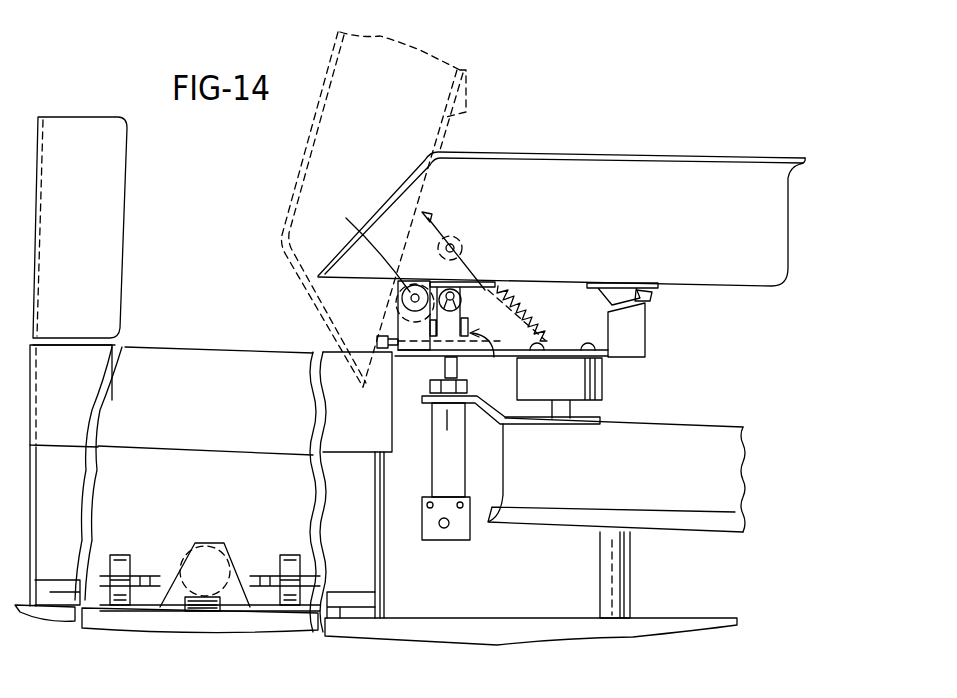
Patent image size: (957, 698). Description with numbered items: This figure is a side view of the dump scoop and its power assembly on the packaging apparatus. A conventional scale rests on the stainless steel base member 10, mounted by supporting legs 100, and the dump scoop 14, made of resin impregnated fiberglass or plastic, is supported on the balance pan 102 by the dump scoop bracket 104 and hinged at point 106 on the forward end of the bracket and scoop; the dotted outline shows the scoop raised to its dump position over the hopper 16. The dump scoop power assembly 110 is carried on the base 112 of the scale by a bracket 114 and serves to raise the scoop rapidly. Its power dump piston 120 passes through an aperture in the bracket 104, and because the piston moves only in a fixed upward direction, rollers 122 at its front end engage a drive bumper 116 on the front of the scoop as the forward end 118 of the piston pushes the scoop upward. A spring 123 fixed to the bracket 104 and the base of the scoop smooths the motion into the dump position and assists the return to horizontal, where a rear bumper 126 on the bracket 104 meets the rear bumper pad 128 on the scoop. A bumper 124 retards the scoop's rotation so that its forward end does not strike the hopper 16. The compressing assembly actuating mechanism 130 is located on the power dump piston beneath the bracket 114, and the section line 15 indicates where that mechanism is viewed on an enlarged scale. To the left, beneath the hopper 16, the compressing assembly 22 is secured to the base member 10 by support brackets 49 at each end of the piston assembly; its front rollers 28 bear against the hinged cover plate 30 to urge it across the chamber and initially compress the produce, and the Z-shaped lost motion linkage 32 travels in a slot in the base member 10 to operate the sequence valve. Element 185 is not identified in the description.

The base member 10 is at (376, 632).
The dump scoop 14 is at (320, 170).
The section line 15— 15 is at (438, 204).
The hopper 16 is at (185, 347).
The compressing assembly 22 is at (195, 541).
The front rollers 28 is at (120, 555).
The hinged cover plate 30 is at (365, 555).
The Z-shaped lost motion linkage 32 is at (202, 613).
The support brackets 49 is at (237, 606).
The supporting legs 100 is at (624, 562).
The balance pan 102 is at (603, 370).
The dump scoop bracket 104 is at (647, 339).
The hinge point 106 is at (361, 247).
The dump scoop power assembly 110 is at (432, 448).
The base of scale 112 is at (694, 427).
The bracket 114 is at (535, 422).
The drive bumper 116 is at (482, 285).
The forward end of power dump piston 118 is at (462, 316).
The power dump piston 120 is at (448, 368).
The rollers 122 is at (463, 290).
The spring 123 is at (541, 328).
The bumper 124 is at (381, 338).
The rear bumper 126 is at (650, 297).
The rear bumper pad 128 is at (618, 292).
The compressing assembly actuating mechanism 130 is at (494, 357).
The base 185 is at (456, 540).